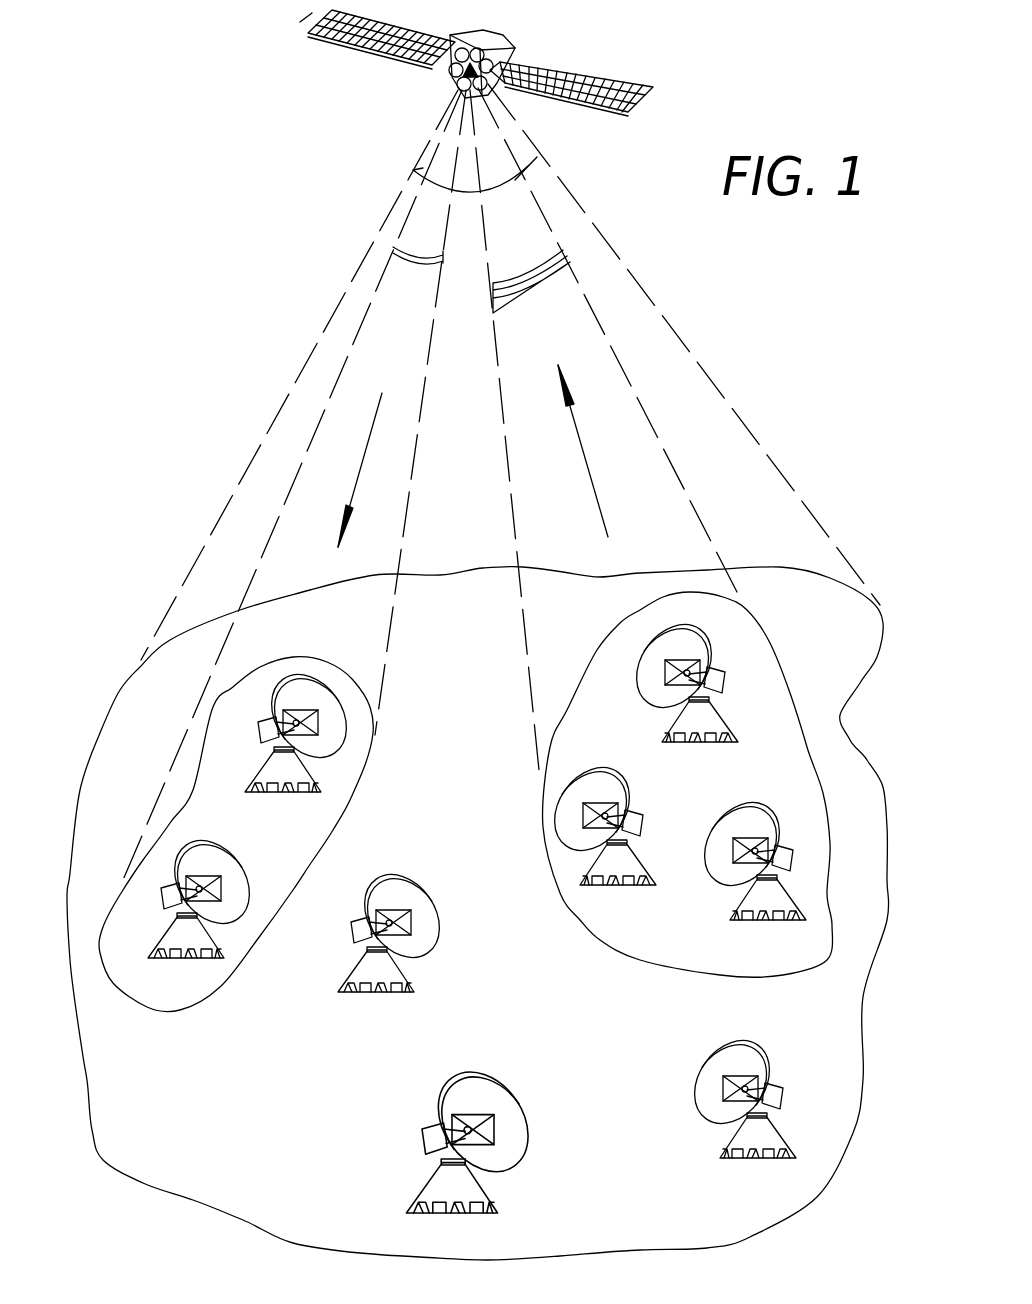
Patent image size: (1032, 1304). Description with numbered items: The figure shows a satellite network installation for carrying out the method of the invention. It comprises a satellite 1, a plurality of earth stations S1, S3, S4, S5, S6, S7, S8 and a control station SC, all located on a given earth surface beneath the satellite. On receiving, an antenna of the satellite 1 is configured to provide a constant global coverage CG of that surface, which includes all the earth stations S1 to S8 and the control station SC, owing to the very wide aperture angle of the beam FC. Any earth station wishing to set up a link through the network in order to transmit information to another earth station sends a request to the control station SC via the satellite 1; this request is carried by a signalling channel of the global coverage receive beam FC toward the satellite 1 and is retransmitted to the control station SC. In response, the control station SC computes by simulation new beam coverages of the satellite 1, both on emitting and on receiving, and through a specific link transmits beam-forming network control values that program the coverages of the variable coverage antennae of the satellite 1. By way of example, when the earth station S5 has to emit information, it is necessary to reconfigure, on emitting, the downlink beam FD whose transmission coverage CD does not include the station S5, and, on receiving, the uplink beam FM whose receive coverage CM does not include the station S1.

The satellite 1 is at (510, 48).
The global coverage receive beam FC is at (517, 180).
The downlink beam FD is at (430, 262).
The uplink beam FM is at (495, 310).
The global coverage CG is at (817, 1197).
The transmission coverage CD is at (148, 1003).
The receive coverage CM is at (560, 883).
The earth station S1 is at (385, 977).
The earth station S3 is at (192, 940).
The earth station S4 is at (287, 780).
The earth station S5 is at (758, 1147).
The earth station S6 is at (627, 873).
The earth station S7 is at (707, 727).
The earth station S8 is at (773, 903).
The control station SC is at (483, 1201).